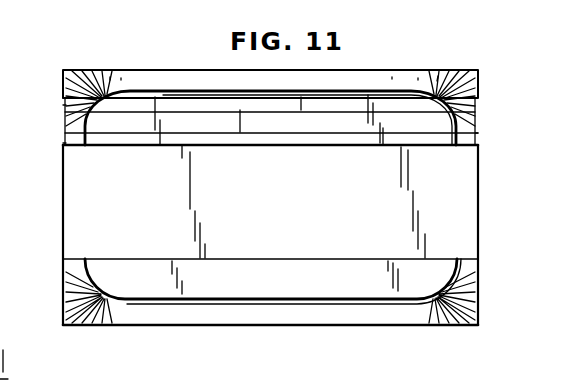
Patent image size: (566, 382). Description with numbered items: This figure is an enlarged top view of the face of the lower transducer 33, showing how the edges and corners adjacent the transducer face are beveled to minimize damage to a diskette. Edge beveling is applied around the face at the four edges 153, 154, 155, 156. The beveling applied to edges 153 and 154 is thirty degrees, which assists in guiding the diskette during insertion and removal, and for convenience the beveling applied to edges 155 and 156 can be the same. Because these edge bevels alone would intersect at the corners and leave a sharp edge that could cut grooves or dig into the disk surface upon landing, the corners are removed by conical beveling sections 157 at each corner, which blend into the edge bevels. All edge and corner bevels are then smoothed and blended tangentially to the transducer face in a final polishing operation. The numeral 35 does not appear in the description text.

The lower transducer 33 is at (416, 67).
The container body 35 is at (152, 381).
The beveled edge 153 is at (320, 313).
The beveled edge 154 is at (355, 78).
The beveled edge 155 is at (66, 127).
The beveled edge 156 is at (478, 137).
The conical beveling section 157 is at (80, 92).